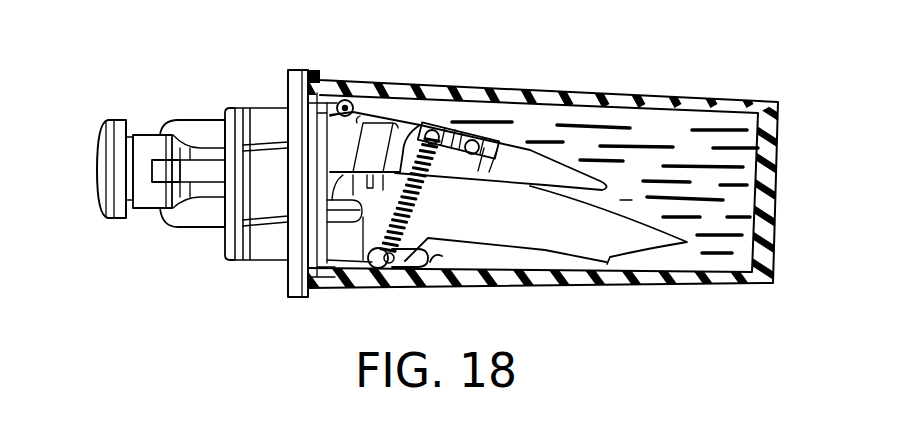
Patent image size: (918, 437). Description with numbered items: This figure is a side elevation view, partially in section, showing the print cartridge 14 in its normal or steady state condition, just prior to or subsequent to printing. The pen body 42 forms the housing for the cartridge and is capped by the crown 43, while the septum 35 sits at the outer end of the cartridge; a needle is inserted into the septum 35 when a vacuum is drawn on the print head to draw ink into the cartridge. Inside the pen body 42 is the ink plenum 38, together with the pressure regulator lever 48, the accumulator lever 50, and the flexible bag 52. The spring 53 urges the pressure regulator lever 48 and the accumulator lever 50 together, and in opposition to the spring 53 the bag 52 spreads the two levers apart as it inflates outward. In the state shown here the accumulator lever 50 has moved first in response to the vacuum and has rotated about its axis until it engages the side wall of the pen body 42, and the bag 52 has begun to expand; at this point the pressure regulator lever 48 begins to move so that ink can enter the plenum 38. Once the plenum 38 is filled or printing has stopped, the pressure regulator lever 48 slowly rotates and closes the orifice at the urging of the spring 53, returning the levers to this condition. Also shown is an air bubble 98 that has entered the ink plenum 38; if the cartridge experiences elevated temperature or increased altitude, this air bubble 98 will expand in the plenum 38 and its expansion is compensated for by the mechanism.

The print cartridge 14 is at (177, 65).
The septum 35 is at (100, 183).
The crown 43 is at (296, 92).
The ink plenum 38 is at (733, 157).
The air bubble 98 is at (342, 99).
The spring 53 is at (413, 125).
The pressure regulator lever 48 is at (520, 163).
The accumulator lever 50 is at (517, 256).
The pen body 42 is at (414, 272).
The flexible bag 52 is at (627, 207).